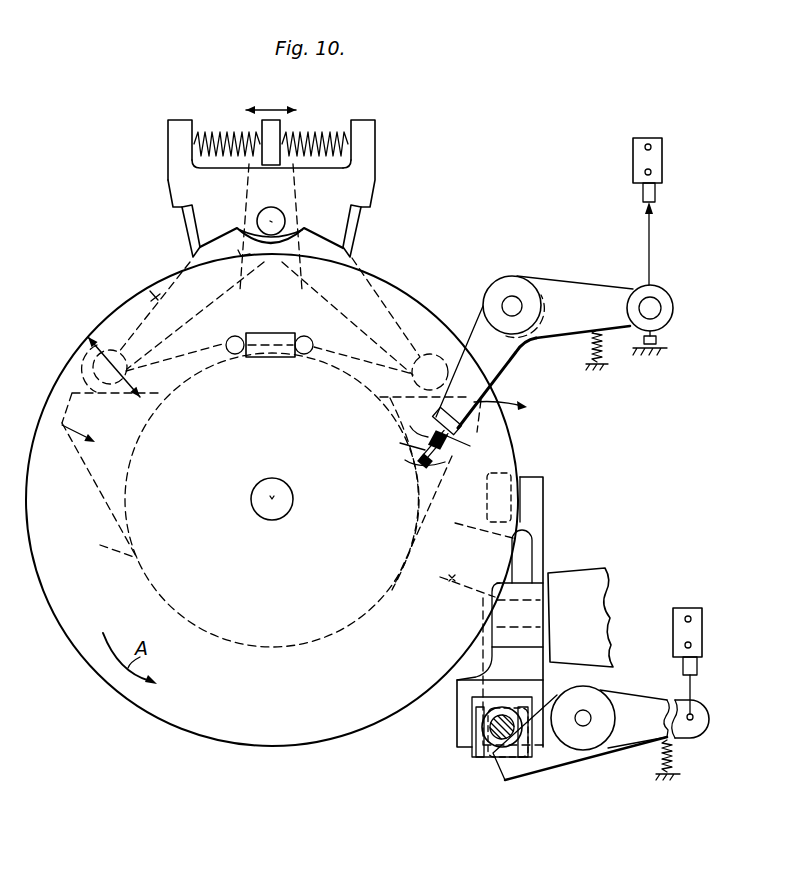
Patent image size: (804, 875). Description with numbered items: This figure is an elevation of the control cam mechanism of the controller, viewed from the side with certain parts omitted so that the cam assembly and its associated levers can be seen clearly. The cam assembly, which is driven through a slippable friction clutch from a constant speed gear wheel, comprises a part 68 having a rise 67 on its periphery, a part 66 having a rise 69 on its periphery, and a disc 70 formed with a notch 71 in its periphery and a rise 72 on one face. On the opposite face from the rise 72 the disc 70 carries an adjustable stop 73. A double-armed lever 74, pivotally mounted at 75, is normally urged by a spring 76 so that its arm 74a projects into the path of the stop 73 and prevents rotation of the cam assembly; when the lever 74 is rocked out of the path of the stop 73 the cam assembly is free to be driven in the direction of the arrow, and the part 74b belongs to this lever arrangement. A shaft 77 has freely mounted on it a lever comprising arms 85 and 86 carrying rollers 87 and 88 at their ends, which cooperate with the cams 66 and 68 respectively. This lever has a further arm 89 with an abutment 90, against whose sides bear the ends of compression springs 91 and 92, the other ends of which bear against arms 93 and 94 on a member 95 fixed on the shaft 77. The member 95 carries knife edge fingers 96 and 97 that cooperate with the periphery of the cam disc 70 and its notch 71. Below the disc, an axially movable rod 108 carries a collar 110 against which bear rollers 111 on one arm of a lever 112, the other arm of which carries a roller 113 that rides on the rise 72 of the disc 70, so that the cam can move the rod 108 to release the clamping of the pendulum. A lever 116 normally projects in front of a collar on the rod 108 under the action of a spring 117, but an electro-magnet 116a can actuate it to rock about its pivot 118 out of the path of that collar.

The cam part 66 is at (137, 556).
The rise 67 is at (90, 391).
The cam part 68 is at (100, 555).
The rise 69 is at (472, 426).
The cam disc 70 is at (272, 500).
The notch 71 is at (247, 261).
The rise 72 is at (462, 565).
The adjustable stop 73 is at (465, 440).
The double-armed lever 74 is at (582, 285).
The lever arm 74a is at (503, 357).
The lever part 74b is at (633, 162).
The pivot 75 is at (512, 295).
The spring 76 is at (590, 350).
The shaft 77 is at (271, 219).
The lever arm 85 is at (148, 283).
The lever arm 86 is at (387, 279).
The roller 87 is at (103, 322).
The roller 88 is at (448, 350).
The lever arm 89 is at (291, 197).
The abutment 90 is at (271, 132).
The compression spring 91 is at (236, 133).
The compression spring 92 is at (330, 133).
The arm 93 is at (176, 143).
The arm 94 is at (358, 140).
The member 95 is at (173, 188).
The knife edge finger 96 is at (188, 238).
The knife edge finger 97 is at (353, 240).
The rod 108 is at (488, 730).
The collar 110 is at (495, 753).
The rollers 111 is at (487, 755).
The lever 112 is at (537, 545).
The roller 113 is at (487, 500).
The lever 116 is at (633, 705).
The electro-magnet 116a is at (682, 633).
The spring 117 is at (658, 762).
The pivot 118 is at (587, 723).